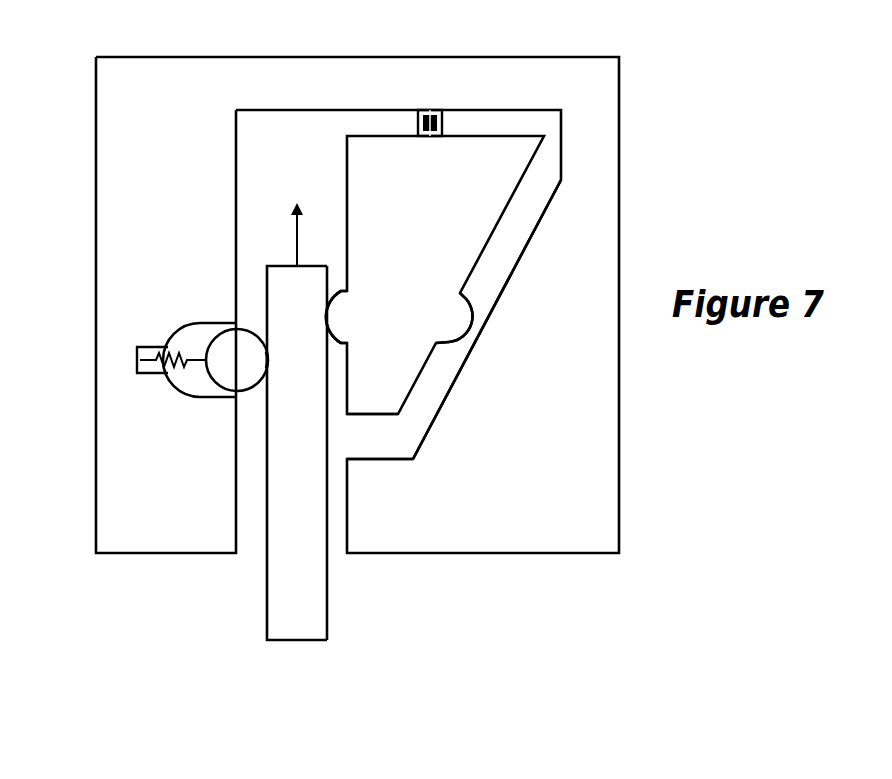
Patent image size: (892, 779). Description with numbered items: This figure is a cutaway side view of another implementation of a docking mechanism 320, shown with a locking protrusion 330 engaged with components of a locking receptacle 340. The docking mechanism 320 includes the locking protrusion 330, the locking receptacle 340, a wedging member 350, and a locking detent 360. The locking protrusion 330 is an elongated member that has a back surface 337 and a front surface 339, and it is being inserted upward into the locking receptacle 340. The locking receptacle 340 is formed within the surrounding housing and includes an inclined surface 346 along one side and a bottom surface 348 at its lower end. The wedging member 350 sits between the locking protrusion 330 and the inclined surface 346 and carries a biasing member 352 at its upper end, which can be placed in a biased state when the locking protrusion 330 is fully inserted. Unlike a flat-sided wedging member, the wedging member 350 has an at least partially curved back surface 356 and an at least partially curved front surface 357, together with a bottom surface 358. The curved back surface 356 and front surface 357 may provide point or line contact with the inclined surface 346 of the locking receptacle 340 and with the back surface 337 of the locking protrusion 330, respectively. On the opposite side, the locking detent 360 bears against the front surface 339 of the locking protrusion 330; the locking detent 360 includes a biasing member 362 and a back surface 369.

The docking mechanism 320 is at (92, 44).
The locking receptacle 340 is at (131, 578).
The inclined surface 346 is at (484, 334).
The bottom surface 348 is at (364, 461).
The wedging member 350 is at (429, 263).
The biasing member 352 is at (444, 126).
The back surface 356 is at (459, 332).
The front surface 357 is at (330, 318).
The bottom surface 358 is at (388, 414).
The locking protrusion 330 is at (315, 464).
The back surface 337 is at (330, 318).
The front surface 339 is at (269, 360).
The locking detent 360 is at (254, 370).
The back surface 369 is at (266, 352).
The biasing member 362 is at (151, 346).